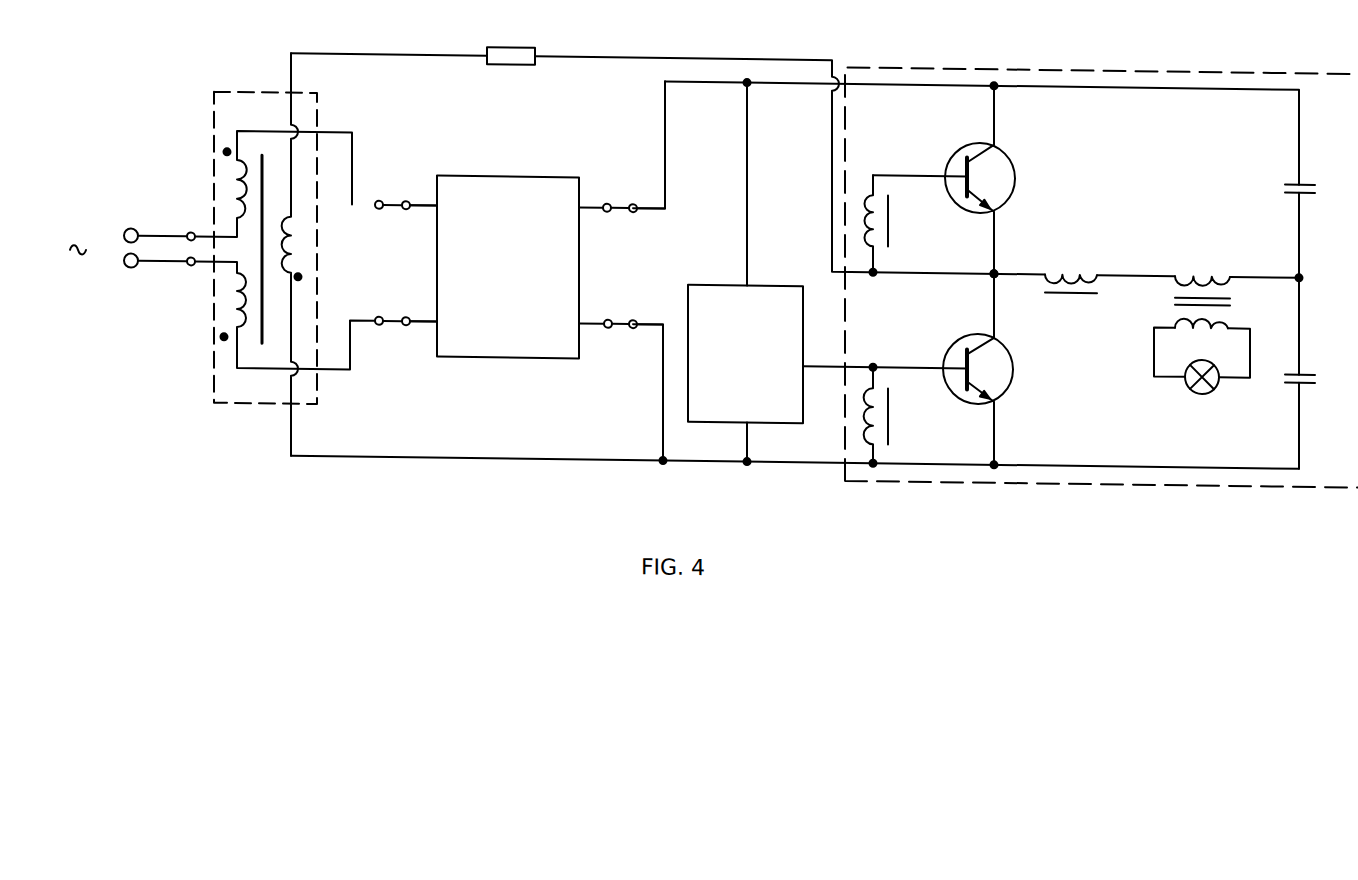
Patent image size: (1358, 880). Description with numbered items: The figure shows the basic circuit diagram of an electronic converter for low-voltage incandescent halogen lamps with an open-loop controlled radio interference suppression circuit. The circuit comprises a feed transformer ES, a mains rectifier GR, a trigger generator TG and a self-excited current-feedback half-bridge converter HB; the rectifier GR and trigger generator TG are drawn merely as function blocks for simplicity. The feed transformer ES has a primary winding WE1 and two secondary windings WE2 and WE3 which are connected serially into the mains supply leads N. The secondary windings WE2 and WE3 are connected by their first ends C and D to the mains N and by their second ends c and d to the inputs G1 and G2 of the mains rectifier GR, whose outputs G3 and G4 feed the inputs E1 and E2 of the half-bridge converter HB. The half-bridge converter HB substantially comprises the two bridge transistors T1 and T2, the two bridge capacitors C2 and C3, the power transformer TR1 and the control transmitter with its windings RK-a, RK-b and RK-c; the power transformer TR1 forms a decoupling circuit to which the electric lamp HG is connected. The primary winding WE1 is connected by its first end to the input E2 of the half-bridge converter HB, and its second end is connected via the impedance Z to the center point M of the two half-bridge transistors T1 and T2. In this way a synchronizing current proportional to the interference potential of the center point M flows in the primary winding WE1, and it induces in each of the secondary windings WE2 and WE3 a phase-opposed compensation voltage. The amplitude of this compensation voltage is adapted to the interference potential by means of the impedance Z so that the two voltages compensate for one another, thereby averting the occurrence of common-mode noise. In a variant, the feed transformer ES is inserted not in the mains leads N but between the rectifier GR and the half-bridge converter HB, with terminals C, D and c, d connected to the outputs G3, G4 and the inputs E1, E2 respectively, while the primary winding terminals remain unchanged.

The feed transformer ES is at (247, 426).
The primary winding WE1 is at (304, 251).
The secondary winding WE2 is at (222, 200).
The secondary winding WE3 is at (219, 317).
The mains supply leads N is at (128, 248).
The first end of secondary winding WE2 C is at (177, 225).
The first end of secondary winding WE3 D is at (178, 285).
The impedance Z is at (511, 42).
The mains rectifier GR is at (508, 267).
The second end of secondary winding WE2 c is at (396, 196).
The second end of secondary winding WE3 d is at (396, 332).
The input of the mains rectifier G1 is at (429, 174).
The input of the mains rectifier G2 is at (426, 355).
The output of the mains rectifier G3 is at (598, 178).
The output of the mains rectifier G4 is at (599, 356).
The input of the half-bridge converter E1 is at (648, 144).
The input of the half-bridge converter E2 is at (645, 392).
The trigger generator TG is at (827, 355).
The self-excited current-feedback half-bridge converter HB is at (1043, 498).
The bridge transistor T1 is at (953, 179).
The bridge transistor T2 is at (988, 369).
The center point M is at (983, 288).
The control transmitter winding RK-a is at (1071, 266).
The control transmitter winding RK-b is at (906, 226).
The control transmitter winding RK-c is at (905, 416).
The power transformer TR1 is at (1202, 284).
The electric lamp HG is at (1202, 381).
The bridge capacitor C2 is at (1310, 175).
The bridge capacitor C3 is at (1310, 365).